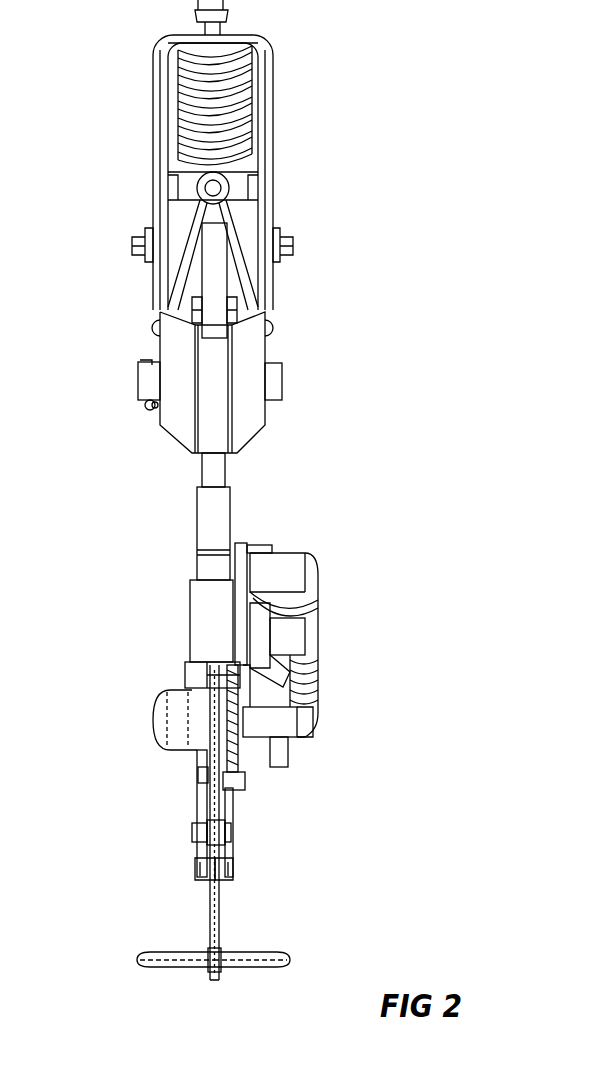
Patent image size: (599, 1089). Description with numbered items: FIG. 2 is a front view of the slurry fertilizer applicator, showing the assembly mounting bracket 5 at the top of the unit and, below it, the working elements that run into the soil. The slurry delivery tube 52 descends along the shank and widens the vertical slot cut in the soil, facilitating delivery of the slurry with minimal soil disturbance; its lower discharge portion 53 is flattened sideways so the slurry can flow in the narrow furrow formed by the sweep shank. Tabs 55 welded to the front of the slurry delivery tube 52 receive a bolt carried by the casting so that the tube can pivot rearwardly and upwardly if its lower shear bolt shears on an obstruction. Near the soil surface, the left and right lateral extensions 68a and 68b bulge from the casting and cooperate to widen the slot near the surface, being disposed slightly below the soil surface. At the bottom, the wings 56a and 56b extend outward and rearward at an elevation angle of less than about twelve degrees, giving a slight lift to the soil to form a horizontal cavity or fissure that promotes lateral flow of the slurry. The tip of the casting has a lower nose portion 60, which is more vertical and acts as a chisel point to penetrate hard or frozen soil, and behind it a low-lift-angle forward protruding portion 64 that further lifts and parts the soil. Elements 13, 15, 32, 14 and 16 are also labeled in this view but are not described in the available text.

The assembly mounting bracket 5 is at (243, 250).
The rod 13 is at (217, 513).
The block 15 is at (213, 622).
The slurry delivery tube 52 is at (180, 678).
The motor 32 is at (278, 642).
The drive assembly 14 is at (323, 676).
The mount 16 is at (305, 767).
The lower discharge portion 53 is at (197, 807).
The tabs 55 is at (195, 845).
The lateral extension 68a is at (232, 873).
The lateral extension 68b is at (197, 873).
The wing 56a is at (290, 962).
The wing 56b is at (137, 960).
The lower nose portion 60 is at (210, 975).
The forward protruding portion 64 is at (218, 968).